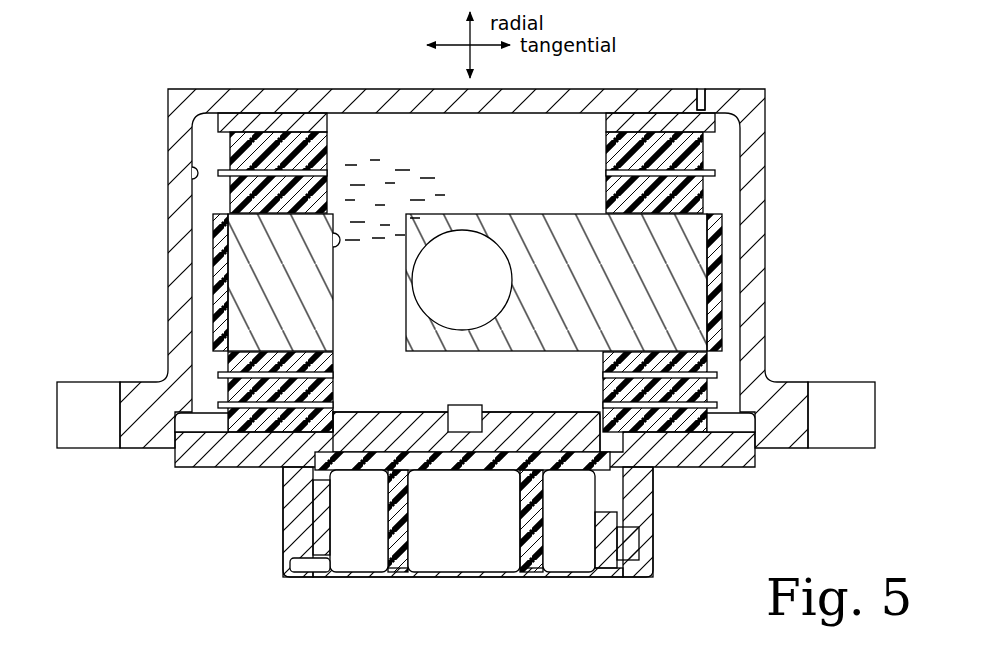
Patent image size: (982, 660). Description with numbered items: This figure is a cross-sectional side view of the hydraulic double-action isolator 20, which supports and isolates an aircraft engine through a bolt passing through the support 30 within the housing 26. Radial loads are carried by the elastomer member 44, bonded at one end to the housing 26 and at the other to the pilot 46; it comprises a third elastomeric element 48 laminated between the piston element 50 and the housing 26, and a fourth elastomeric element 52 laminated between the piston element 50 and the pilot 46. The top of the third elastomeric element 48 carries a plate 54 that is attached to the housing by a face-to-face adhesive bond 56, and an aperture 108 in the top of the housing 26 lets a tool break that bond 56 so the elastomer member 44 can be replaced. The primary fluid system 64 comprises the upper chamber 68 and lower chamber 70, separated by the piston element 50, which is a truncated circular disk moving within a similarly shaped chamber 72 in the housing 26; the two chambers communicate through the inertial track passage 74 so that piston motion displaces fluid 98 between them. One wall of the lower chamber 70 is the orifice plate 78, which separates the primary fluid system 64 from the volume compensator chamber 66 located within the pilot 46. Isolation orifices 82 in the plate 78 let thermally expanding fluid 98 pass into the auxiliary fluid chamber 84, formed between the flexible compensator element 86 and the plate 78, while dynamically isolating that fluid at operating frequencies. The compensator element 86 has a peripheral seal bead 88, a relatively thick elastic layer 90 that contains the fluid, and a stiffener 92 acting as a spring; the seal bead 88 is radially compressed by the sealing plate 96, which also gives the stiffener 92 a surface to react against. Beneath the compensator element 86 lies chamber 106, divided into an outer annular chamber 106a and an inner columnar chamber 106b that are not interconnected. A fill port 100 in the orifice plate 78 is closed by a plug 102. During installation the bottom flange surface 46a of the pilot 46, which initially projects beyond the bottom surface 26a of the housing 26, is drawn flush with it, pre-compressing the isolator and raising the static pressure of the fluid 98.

The hydraulic double-action isolator 20 is at (697, 57).
The housing 26 is at (607, 88).
The bottom surface of housing 26a is at (100, 450).
The support 30 is at (455, 230).
The elastomer member 44 is at (713, 150).
The pilot 46 is at (298, 490).
The bottom flange surface of pilot 46a is at (192, 467).
The third elastomeric element 48 is at (225, 150).
The piston element 50 is at (693, 262).
The fourth elastomeric element 52 is at (223, 392).
The plate 54 is at (307, 122).
The adhesive bond 56 is at (258, 112).
The primary fluid system 64 is at (375, 133).
The volume compensator chamber 66 is at (315, 515).
The upper chamber 68 is at (553, 176).
The lower chamber 70 is at (576, 386).
The chamber 72 is at (192, 173).
The inertial track passage 74 is at (333, 240).
The orifice plate 78 is at (333, 350).
The isolation orifice 82 is at (222, 320).
The auxiliary fluid chamber 84 is at (628, 518).
The compensator element 86 is at (492, 527).
The peripheral seal bead 88 is at (640, 560).
The elastic layer 90 is at (513, 545).
The stiffener 92 is at (535, 535).
The sealing plate 96 is at (305, 572).
The fluid 98 is at (395, 200).
The port 100 is at (452, 417).
The plug 102 is at (467, 413).
The chamber 106 is at (448, 538).
The outer annular chamber 106a is at (384, 504).
The inner columnar chamber 106b is at (478, 516).
The aperture 108 is at (700, 88).